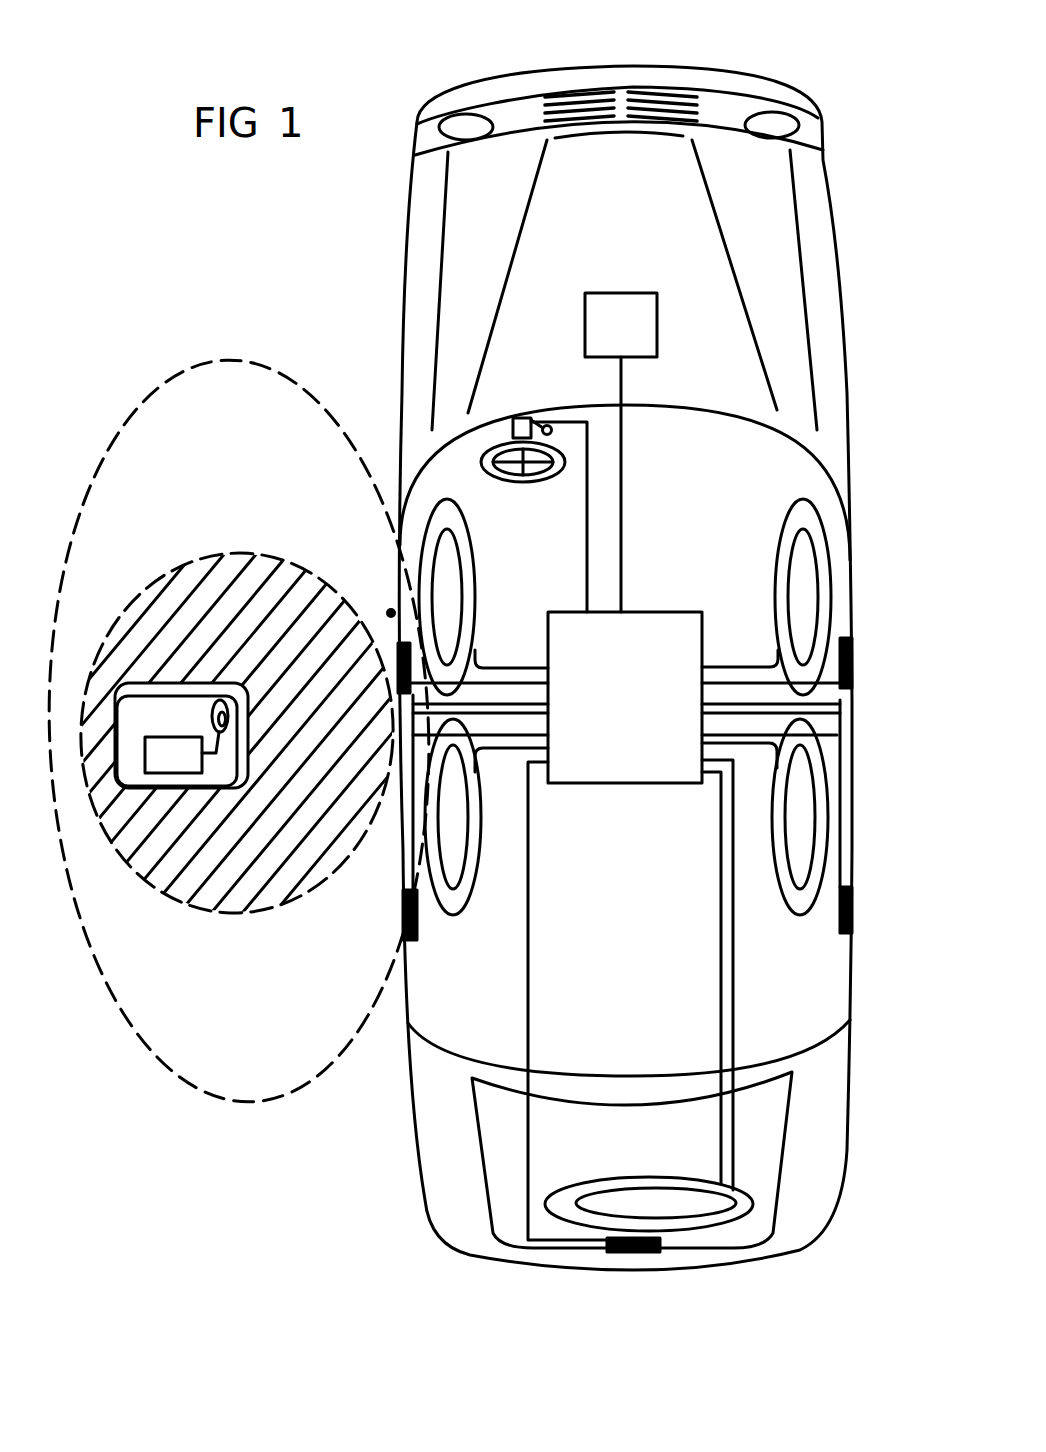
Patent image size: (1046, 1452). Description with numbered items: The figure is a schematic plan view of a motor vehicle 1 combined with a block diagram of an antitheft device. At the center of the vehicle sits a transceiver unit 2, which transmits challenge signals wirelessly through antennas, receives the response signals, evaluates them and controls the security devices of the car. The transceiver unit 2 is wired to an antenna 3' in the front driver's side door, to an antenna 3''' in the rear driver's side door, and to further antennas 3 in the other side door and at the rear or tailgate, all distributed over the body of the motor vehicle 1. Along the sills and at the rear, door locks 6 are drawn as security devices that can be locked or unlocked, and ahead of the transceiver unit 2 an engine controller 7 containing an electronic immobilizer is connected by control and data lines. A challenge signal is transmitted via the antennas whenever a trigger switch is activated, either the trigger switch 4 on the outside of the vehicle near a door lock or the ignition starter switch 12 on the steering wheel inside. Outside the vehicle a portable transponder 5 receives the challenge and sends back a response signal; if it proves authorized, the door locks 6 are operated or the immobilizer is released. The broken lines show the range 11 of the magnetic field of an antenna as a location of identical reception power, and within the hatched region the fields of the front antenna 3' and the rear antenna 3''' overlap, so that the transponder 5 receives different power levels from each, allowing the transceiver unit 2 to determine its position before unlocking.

The motor vehicle 1 is at (728, 66).
The transceiver unit 2 is at (667, 623).
The antenna 3 is at (686, 975).
The antenna in the front driver's side door 3' is at (483, 597).
The antenna in the rear driver's side door 3''' is at (486, 817).
The trigger switch 4 is at (388, 612).
The transponder 5 is at (216, 664).
The door lock 6 is at (852, 667).
The engine controller 7 is at (620, 302).
The range 11 is at (202, 363).
The ignition starter switch 12 is at (543, 420).